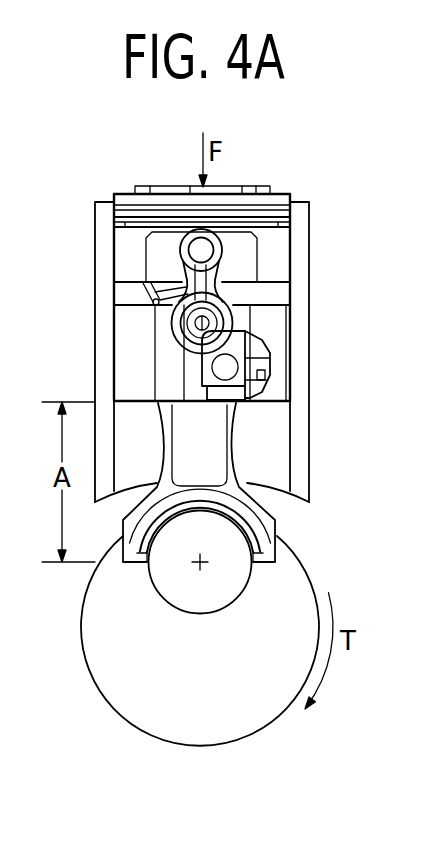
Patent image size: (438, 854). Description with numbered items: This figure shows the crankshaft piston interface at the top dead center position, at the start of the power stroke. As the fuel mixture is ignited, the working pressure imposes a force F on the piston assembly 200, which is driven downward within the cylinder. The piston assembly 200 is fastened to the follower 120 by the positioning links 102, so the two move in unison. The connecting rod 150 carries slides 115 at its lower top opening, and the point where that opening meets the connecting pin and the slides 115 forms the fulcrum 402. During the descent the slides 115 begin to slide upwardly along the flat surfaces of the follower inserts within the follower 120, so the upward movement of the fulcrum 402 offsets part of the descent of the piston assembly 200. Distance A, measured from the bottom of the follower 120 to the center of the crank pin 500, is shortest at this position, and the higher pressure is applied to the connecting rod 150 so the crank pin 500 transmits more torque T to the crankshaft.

The piston assembly 200 is at (275, 245).
The positioning links 102 is at (222, 267).
The follower 120 is at (275, 330).
The fulcrum 402 is at (292, 381).
The slides 115 is at (261, 376).
The connecting rod 150 is at (237, 440).
The crank pin 500 is at (233, 545).